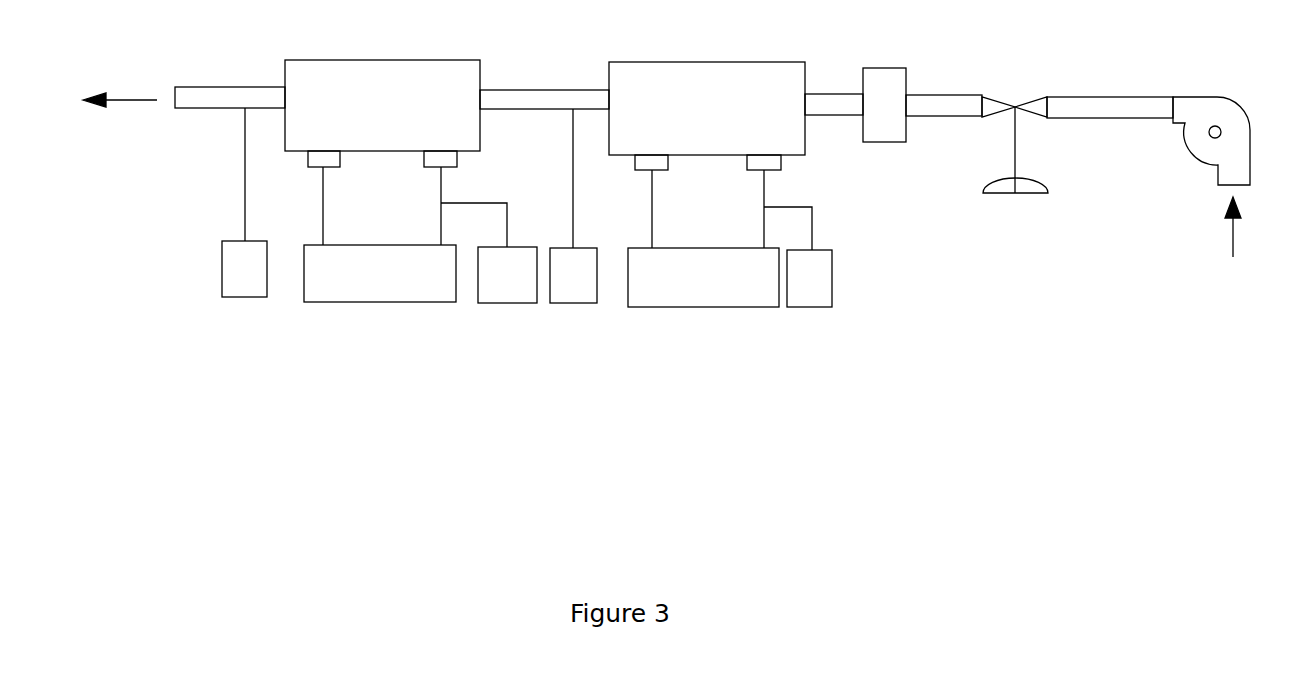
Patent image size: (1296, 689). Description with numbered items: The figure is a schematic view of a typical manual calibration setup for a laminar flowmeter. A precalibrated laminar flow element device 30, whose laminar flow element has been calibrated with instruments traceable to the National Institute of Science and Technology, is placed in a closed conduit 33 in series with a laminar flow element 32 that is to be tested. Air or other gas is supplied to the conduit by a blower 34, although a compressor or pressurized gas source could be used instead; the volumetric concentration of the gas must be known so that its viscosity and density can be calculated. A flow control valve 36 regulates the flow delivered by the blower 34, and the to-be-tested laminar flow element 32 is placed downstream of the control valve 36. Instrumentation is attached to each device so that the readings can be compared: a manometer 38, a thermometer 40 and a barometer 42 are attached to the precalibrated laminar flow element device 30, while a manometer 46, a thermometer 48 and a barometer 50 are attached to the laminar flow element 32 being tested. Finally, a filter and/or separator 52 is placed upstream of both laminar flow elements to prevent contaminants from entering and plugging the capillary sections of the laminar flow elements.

The precalibrated laminar flow element device 30 is at (380, 60).
The laminar flow element to be tested 32 is at (742, 62).
The closed conduit 33 is at (1100, 123).
The blower 34 is at (1250, 115).
The flow control valve 36 is at (1015, 87).
The manometer 38 is at (388, 309).
The thermometer 40 is at (250, 298).
The barometer 42 is at (527, 304).
The manometer 46 is at (727, 312).
The thermometer 48 is at (593, 307).
The barometer 50 is at (807, 313).
The filter and/or separator 52 is at (912, 83).